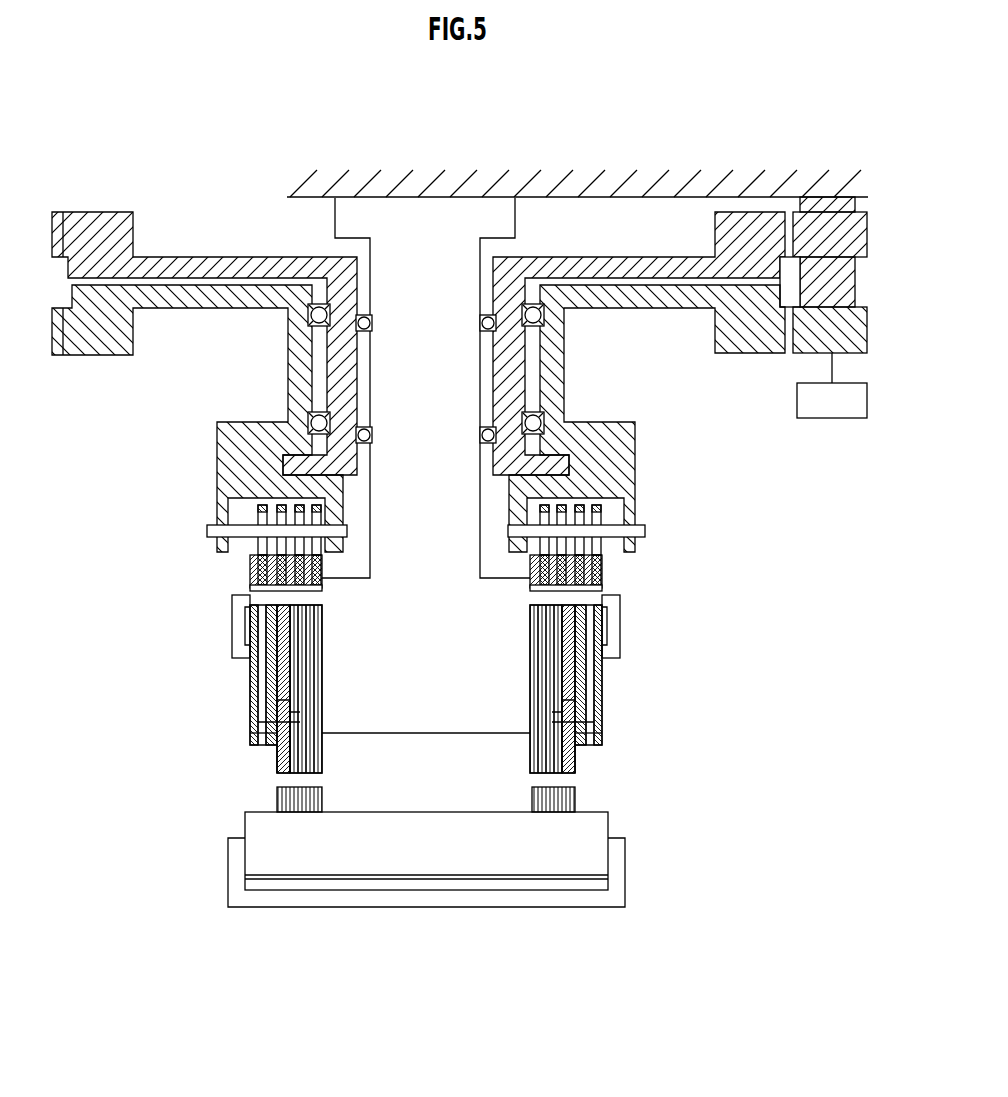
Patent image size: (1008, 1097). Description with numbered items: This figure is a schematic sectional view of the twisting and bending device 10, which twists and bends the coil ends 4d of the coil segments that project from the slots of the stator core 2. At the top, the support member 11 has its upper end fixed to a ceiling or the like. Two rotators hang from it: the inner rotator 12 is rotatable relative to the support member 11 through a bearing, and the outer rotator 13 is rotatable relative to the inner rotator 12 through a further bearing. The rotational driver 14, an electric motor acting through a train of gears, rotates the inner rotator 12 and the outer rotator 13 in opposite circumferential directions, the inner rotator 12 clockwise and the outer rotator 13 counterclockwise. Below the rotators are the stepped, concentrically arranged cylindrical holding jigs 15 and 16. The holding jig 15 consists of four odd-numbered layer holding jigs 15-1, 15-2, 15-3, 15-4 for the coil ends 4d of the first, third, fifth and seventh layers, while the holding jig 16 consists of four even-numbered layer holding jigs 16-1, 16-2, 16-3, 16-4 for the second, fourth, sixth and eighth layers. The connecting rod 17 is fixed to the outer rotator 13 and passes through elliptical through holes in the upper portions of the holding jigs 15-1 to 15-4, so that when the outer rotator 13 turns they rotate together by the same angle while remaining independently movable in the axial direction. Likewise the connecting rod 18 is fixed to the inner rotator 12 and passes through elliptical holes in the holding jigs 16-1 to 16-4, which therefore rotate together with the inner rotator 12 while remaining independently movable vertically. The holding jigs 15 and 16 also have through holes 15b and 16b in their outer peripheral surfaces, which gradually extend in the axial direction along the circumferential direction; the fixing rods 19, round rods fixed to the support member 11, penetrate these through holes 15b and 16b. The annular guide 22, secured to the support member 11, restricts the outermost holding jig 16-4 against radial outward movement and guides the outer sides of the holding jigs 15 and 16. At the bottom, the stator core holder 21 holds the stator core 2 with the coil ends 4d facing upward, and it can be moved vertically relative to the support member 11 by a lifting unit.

The twisting and bending device 10 is at (530, 146).
The support member 11 is at (342, 222).
The inner rotator 12 is at (513, 368).
The outer rotator 13 is at (292, 358).
The rotational driver 14 is at (832, 418).
The holding jig 15 is at (160, 683).
The odd-numbered layer holding jig 15-1 is at (312, 757).
The odd-numbered layer holding jig 15-2 is at (300, 735).
The odd-numbered layer holding jig 15-3 is at (282, 718).
The odd-numbered layer holding jig 15-4 is at (262, 693).
The through hole 15b is at (252, 593).
The holding jig 16 is at (700, 680).
The even-numbered layer holding jig 16-1 is at (540, 756).
The even-numbered layer holding jig 16-2 is at (555, 734).
The even-numbered layer holding jig 16-3 is at (575, 717).
The even-numbered layer holding jig 16-4 is at (590, 691).
The through hole 16b is at (600, 593).
The connecting rod 17 is at (207, 531).
The connecting rod 18 is at (645, 531).
The fixing rod 19 is at (250, 589).
The stator core 2 is at (608, 826).
The stator core holder 21 is at (625, 886).
The guide 22 is at (232, 640).
The coil end 4d is at (575, 797).